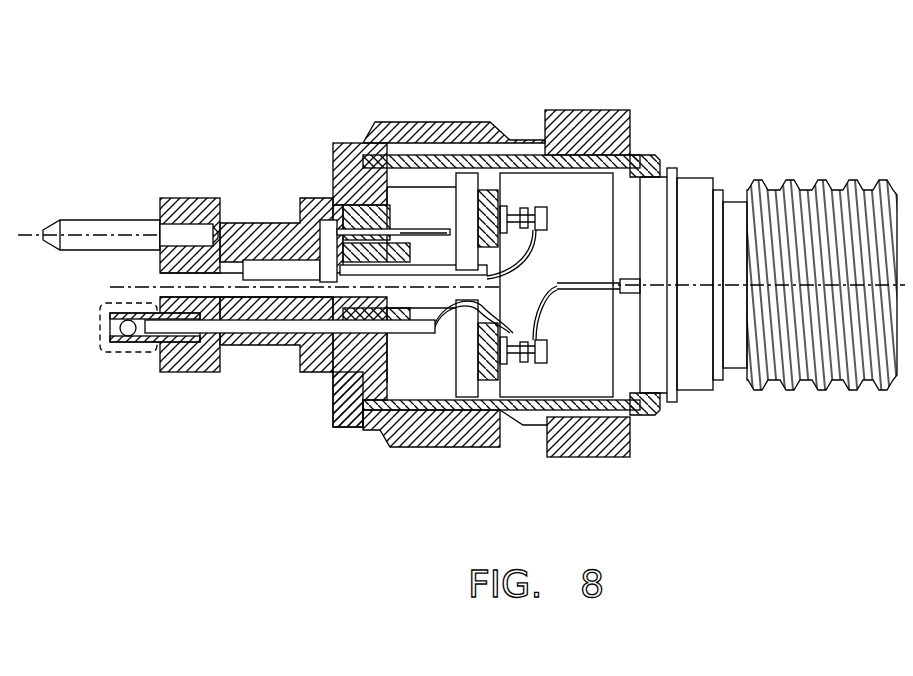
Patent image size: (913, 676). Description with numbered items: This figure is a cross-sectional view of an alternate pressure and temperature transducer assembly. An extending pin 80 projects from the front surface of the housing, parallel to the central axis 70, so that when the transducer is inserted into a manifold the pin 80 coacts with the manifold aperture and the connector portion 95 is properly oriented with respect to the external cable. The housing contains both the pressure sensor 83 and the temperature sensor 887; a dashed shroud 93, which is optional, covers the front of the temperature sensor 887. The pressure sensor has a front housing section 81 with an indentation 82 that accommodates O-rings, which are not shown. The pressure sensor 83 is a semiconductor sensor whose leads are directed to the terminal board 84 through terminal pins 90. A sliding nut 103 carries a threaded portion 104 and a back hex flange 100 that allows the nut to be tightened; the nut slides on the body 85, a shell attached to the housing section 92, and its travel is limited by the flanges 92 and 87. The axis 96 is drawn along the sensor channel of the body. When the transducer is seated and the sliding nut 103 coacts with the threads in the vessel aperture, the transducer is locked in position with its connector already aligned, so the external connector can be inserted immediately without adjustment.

The central axis 70 is at (897, 217).
The extending pin 80 is at (77, 220).
The front housing section 81 is at (180, 198).
The indentation 82 is at (237, 222).
The pressure sensor 83 is at (370, 232).
The terminal board 84 is at (497, 155).
The body 85 is at (438, 140).
The flange 87 is at (641, 155).
The terminal pins 90 is at (433, 233).
The housing section 92 is at (345, 425).
The shroud 93 is at (120, 355).
The connector portion 95 is at (693, 173).
The axis 96 is at (165, 293).
The back hex flange 100 is at (567, 110).
The sliding nut 103 is at (523, 425).
The threaded portion 104 is at (443, 122).
The temperature sensor 887 is at (145, 333).